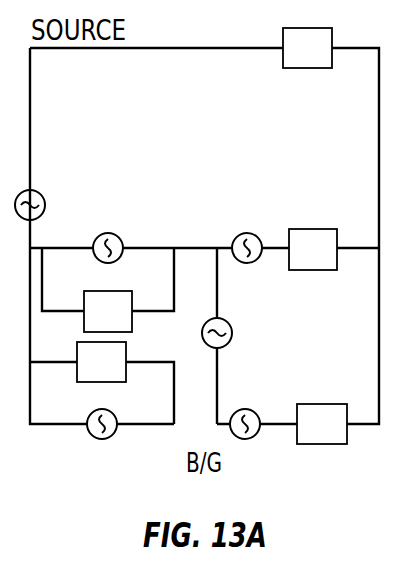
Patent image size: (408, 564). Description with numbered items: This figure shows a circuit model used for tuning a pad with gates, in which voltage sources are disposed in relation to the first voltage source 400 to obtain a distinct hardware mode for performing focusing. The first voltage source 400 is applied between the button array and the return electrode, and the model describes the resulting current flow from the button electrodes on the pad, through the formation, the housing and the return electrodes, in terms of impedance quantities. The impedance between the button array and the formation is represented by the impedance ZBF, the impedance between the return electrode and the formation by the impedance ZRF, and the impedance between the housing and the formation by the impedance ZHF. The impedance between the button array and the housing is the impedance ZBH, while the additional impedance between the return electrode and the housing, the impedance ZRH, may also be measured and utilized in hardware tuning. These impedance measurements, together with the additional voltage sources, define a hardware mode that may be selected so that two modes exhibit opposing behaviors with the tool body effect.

The voltage source 400 is at (232, 333).
The impedance between housing and formation ZHF is at (307, 48).
The impedance between return electrode and formation ZRF is at (313, 250).
The impedance between return electrode and housing ZRH is at (108, 312).
The impedance between button array and housing ZBH is at (101, 362).
The impedance between button array and formation ZBF is at (322, 424).